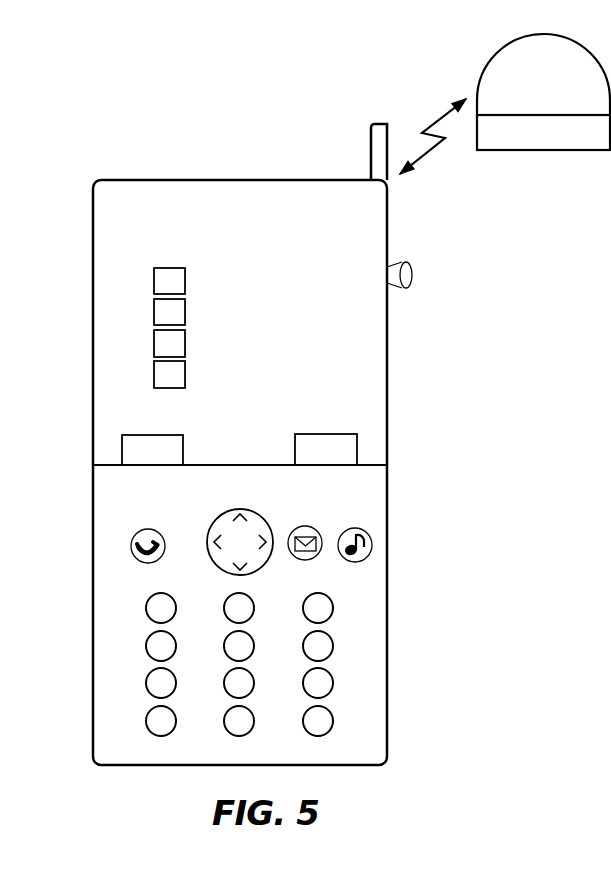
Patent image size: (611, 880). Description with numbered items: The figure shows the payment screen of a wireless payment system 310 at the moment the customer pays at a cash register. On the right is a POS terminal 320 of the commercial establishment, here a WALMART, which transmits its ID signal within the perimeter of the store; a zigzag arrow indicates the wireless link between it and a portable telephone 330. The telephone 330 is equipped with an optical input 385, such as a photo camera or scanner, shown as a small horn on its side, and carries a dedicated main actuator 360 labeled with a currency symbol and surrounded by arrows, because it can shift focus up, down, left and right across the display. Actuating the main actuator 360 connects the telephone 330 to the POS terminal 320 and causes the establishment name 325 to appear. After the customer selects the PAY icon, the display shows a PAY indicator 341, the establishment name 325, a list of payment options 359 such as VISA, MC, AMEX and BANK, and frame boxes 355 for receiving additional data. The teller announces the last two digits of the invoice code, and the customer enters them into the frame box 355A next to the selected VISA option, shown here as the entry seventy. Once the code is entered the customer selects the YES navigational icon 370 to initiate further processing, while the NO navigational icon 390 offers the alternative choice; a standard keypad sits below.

The system 310 is at (427, 130).
The POS terminal 320 is at (558, 150).
The establishment name 325 is at (306, 238).
The portable telephone 330 is at (387, 565).
The PAY indicator 341 is at (264, 208).
The frame boxes 355 is at (154, 372).
The frame box 355A is at (154, 280).
The payment options 359 is at (236, 310).
The main actuator 360 is at (208, 528).
The YES navigational icon 370 is at (122, 446).
The optical input 385 is at (410, 287).
The NO navigational icon 390 is at (357, 450).